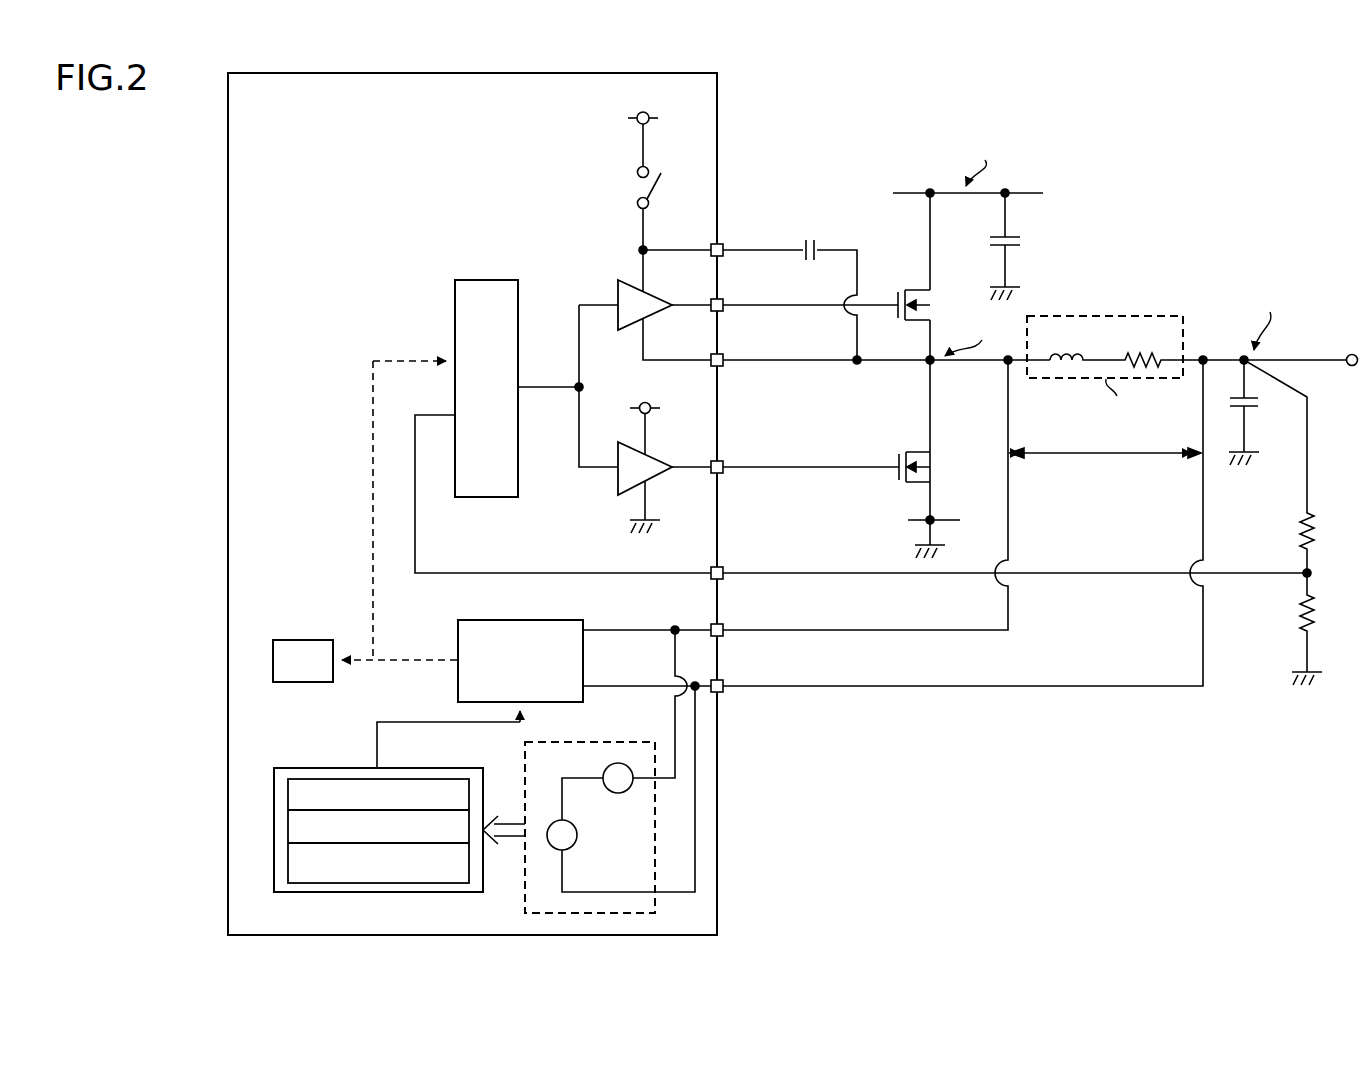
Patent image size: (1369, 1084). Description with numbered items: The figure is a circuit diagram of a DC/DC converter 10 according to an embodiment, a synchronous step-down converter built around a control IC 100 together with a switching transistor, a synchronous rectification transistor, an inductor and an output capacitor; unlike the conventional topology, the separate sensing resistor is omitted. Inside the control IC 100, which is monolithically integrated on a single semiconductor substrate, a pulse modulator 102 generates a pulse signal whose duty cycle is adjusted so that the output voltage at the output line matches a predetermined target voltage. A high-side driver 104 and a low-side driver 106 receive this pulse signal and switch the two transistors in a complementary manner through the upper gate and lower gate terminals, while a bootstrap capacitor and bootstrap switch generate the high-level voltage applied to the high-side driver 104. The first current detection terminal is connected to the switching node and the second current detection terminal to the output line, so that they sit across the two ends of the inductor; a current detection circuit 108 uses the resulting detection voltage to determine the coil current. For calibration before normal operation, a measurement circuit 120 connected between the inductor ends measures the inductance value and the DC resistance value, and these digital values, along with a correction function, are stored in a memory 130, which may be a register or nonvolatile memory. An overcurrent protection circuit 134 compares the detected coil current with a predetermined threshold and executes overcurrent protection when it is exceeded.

The DC/DC converter 10 is at (1326, 126).
The control IC 100 is at (717, 805).
The pulse modulator 102 is at (488, 280).
The high-side driver 104 is at (662, 300).
The low-side driver 106 is at (664, 462).
The current detection circuit 108 is at (521, 620).
The measurement circuit 120 is at (588, 742).
The memory 130 is at (325, 768).
The overcurrent protection circuit 134 is at (304, 640).